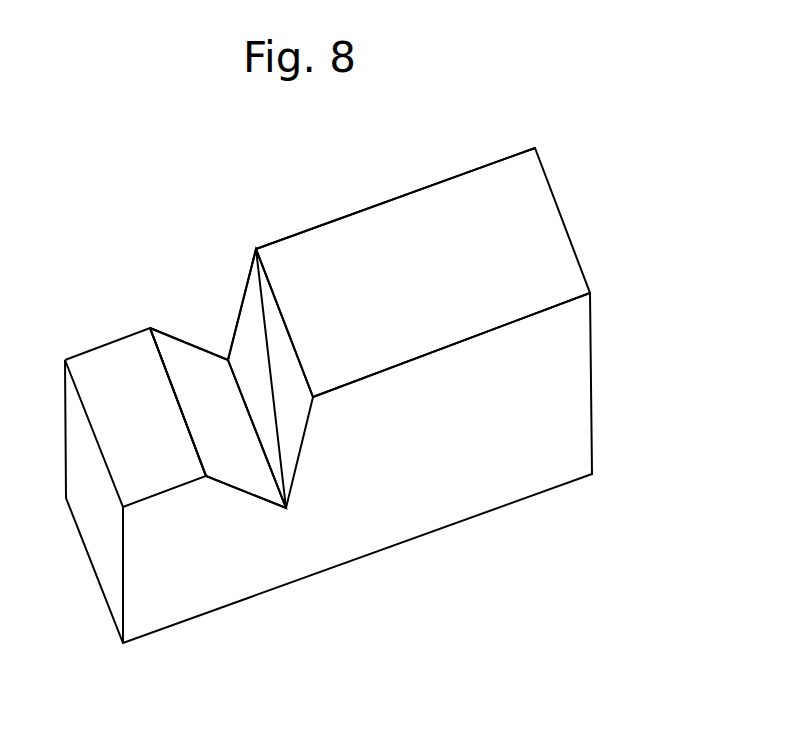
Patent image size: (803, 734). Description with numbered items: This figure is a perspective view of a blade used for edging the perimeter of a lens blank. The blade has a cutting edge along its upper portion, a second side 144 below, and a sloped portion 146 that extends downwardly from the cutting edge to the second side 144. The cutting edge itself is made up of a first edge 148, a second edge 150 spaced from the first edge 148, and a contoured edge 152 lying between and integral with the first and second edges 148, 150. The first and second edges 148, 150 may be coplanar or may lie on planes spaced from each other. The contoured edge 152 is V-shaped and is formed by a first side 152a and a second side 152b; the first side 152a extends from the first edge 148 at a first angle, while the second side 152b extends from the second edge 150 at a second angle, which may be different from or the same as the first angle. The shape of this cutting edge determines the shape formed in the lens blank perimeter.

The second side 144 is at (555, 395).
The sloped portion 146 is at (517, 260).
The first edge 148 is at (88, 342).
The second edge 150 is at (366, 200).
The contoured edge 152 is at (208, 272).
The first side 152a is at (171, 325).
The second side 152b is at (233, 275).